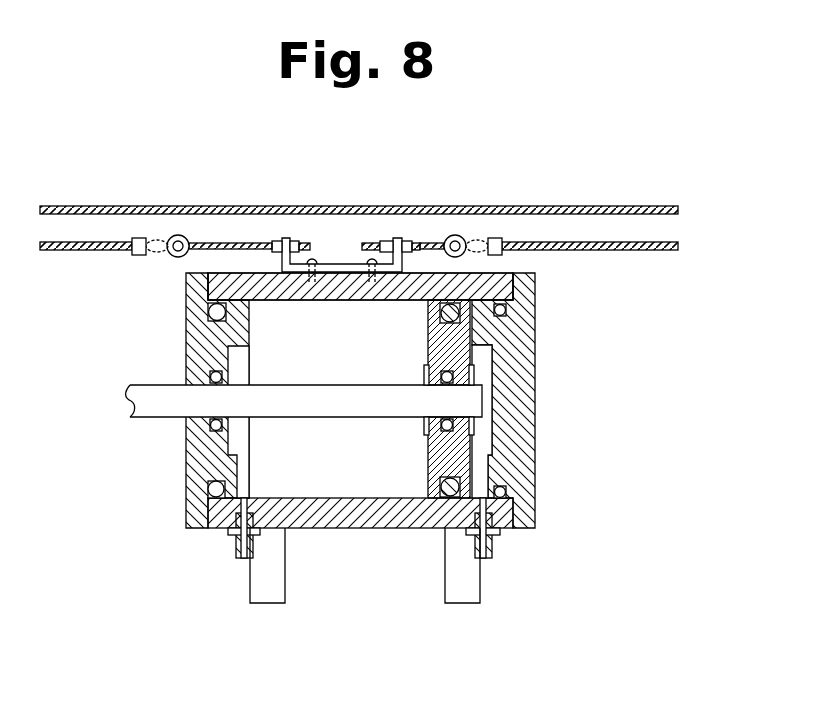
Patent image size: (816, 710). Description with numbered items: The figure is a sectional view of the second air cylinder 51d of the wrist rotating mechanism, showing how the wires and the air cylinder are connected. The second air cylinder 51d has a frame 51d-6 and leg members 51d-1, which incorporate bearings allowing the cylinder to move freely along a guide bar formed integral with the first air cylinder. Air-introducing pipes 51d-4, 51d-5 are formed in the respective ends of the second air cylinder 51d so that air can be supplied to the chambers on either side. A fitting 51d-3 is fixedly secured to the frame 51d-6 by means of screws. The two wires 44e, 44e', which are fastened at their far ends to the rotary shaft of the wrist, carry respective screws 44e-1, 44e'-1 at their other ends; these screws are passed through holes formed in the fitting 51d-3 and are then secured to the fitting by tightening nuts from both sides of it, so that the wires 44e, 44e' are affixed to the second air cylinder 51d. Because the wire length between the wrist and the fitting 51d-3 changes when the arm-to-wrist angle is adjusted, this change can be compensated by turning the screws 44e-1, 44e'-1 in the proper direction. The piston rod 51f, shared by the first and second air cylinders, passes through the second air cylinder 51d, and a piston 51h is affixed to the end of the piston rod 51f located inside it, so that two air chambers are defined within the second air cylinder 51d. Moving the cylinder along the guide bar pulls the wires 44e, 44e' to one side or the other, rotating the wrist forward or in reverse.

The wire 44e is at (359, 191).
The wire 44e' is at (590, 196).
The screw 44e-1 is at (222, 245).
The screw 44e'-1 is at (475, 197).
The second air cylinder 51d is at (545, 423).
The leg member 51d-1 is at (273, 596).
The fitting 51d-3 is at (342, 265).
The air-introducing pipe 51d-4 is at (238, 555).
The air-introducing pipe 51d-5 is at (492, 548).
The frame 51d-6 is at (202, 276).
The piston rod 51f is at (155, 412).
The piston 51h is at (463, 338).